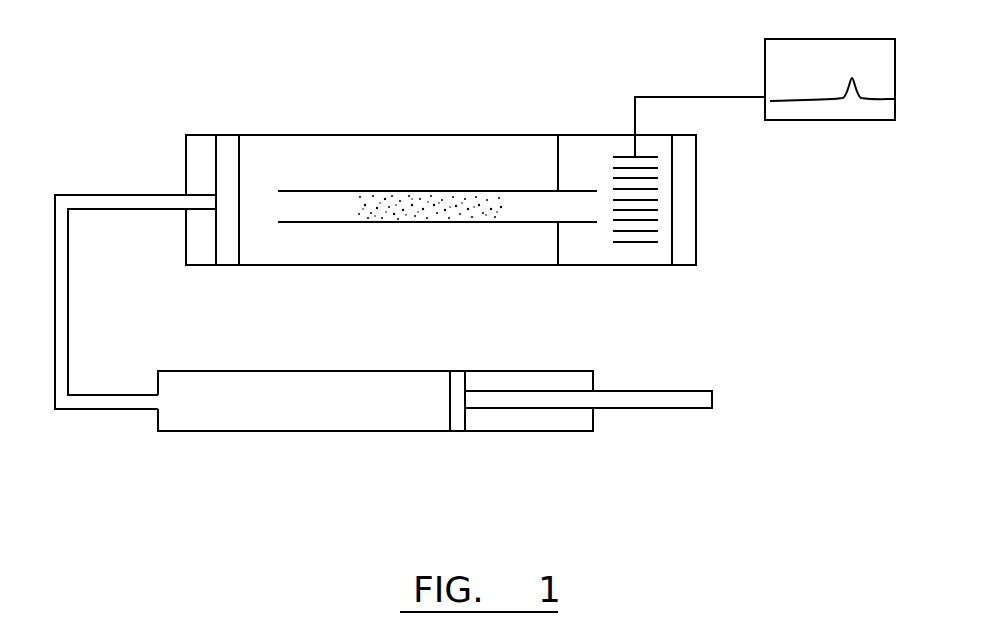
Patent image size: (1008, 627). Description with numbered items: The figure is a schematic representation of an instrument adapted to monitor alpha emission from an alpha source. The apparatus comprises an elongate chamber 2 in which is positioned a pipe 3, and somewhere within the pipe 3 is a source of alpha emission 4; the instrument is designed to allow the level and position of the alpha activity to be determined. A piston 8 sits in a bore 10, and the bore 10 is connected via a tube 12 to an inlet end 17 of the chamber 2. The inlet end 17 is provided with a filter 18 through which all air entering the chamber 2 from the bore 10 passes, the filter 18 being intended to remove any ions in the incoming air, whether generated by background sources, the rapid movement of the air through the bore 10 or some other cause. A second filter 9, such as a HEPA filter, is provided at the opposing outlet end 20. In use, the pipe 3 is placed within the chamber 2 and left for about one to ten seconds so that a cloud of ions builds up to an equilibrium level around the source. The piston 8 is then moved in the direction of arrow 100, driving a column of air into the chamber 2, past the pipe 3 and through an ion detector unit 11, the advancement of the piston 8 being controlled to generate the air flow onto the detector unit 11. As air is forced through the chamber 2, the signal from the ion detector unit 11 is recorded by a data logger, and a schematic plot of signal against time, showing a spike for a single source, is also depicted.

The elongate chamber 2 is at (391, 124).
The pipe 3 is at (317, 190).
The source of alpha emission 4 is at (377, 220).
The piston 8 is at (460, 415).
The second filter 9 is at (683, 227).
The bore 10 is at (347, 403).
The ion detector unit 11 is at (637, 228).
The tube 12 is at (62, 295).
The inlet end 17 is at (200, 179).
The filter 18 is at (228, 152).
The outlet end 20 is at (712, 206).
The arrow 100 is at (760, 398).